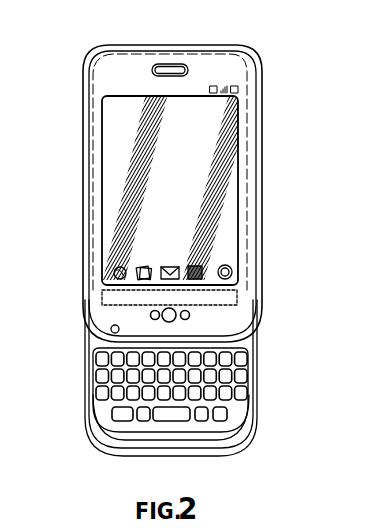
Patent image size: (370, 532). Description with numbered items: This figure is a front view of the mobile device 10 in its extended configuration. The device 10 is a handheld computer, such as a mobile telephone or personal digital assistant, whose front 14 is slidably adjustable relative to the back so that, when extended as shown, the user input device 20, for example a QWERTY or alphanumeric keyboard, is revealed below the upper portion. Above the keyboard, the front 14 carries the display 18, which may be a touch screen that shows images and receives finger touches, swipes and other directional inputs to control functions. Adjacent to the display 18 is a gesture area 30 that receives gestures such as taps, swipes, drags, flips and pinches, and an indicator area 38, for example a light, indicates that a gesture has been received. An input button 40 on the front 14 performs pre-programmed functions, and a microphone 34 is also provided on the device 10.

The device 10 is at (198, 30).
The front 14 is at (212, 80).
The display 18 is at (225, 183).
The user input device 20 is at (242, 380).
The gesture area 30 is at (233, 300).
The microphone 34 is at (111, 331).
The indicator area 38 is at (193, 314).
The input button 40 is at (161, 309).